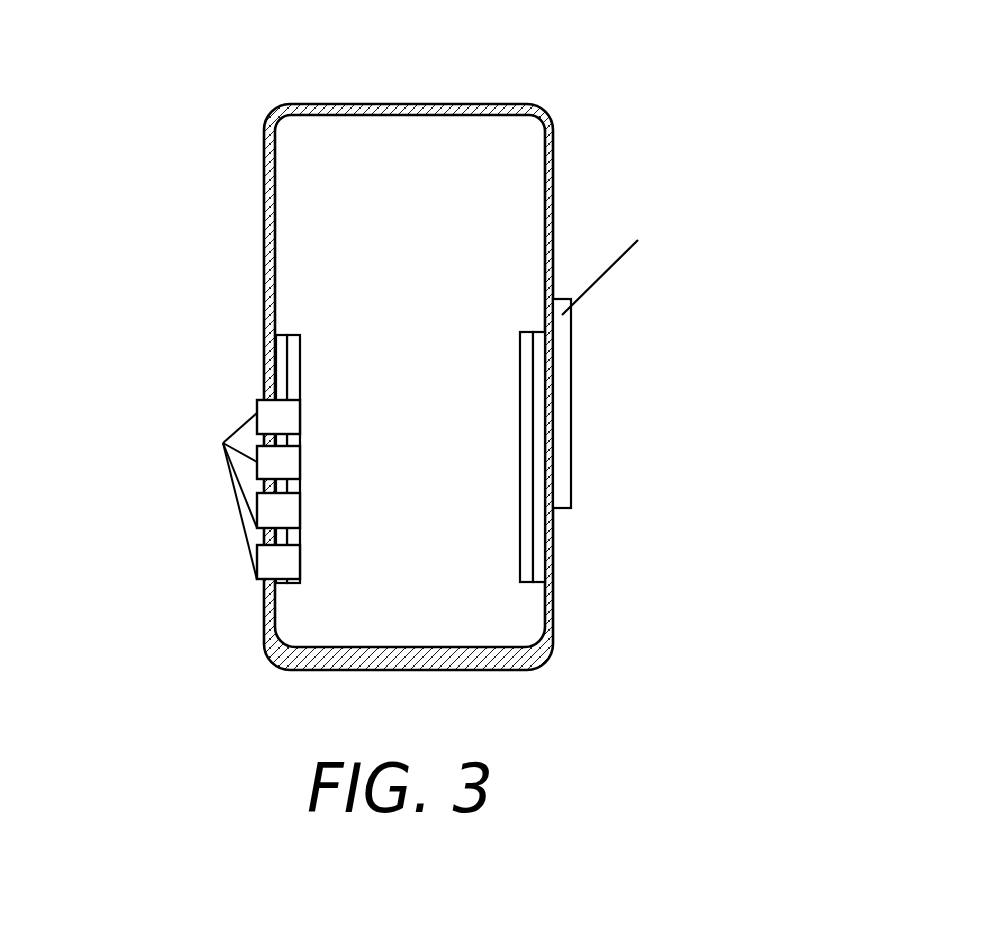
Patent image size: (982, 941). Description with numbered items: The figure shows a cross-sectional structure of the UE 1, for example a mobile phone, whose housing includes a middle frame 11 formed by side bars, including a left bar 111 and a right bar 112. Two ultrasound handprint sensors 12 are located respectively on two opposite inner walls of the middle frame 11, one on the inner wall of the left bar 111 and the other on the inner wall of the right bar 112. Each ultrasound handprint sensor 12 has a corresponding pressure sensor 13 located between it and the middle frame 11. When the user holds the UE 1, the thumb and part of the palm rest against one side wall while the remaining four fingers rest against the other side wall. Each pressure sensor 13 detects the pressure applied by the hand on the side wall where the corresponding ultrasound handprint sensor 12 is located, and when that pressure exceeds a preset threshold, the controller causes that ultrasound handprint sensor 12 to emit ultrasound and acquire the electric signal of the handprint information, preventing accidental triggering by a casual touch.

The UE 1 is at (434, 340).
The middle frame 11 is at (416, 347).
The left bar 111 is at (275, 248).
The right bar 112 is at (547, 250).
The ultrasound handprint sensor 12 is at (295, 353).
The pressure sensor 13 is at (280, 390).